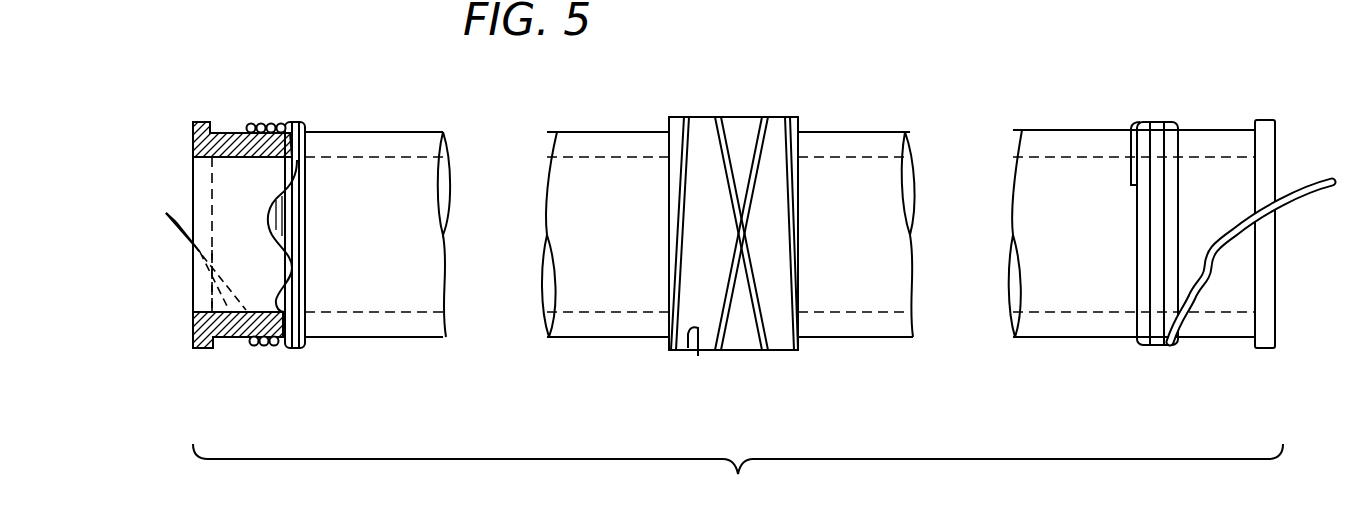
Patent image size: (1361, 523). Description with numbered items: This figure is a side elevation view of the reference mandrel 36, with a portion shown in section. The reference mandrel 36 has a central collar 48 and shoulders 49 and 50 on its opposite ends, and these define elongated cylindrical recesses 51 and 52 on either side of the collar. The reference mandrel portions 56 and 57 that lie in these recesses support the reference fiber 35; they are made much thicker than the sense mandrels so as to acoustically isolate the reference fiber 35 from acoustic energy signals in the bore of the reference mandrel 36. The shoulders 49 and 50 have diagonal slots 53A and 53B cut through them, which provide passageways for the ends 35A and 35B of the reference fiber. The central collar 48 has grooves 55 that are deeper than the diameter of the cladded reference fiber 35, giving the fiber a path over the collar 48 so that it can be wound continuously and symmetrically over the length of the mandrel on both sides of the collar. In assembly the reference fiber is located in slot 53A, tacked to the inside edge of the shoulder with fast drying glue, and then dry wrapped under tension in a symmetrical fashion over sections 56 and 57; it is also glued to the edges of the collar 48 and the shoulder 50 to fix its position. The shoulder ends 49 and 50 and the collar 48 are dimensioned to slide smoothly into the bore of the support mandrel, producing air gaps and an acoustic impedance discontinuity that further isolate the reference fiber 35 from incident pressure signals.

The reference fiber 35 is at (291, 358).
The end of the reference fiber 35A is at (1303, 193).
The end of the reference fiber 35B is at (177, 228).
The reference mandrel 36 is at (955, 118).
The central collar 48 is at (735, 100).
The shoulder 49 is at (1268, 120).
The shoulder 50 is at (193, 122).
The elongated cylindrical recess 51 is at (1254, 122).
The elongated cylindrical recess 52 is at (216, 130).
The diagonal slot 53A is at (1263, 210).
The diagonal slot 53B is at (215, 292).
The grooves 55 is at (697, 357).
The reference mandrel portion 56 is at (850, 130).
The reference mandrel portion 57 is at (363, 135).